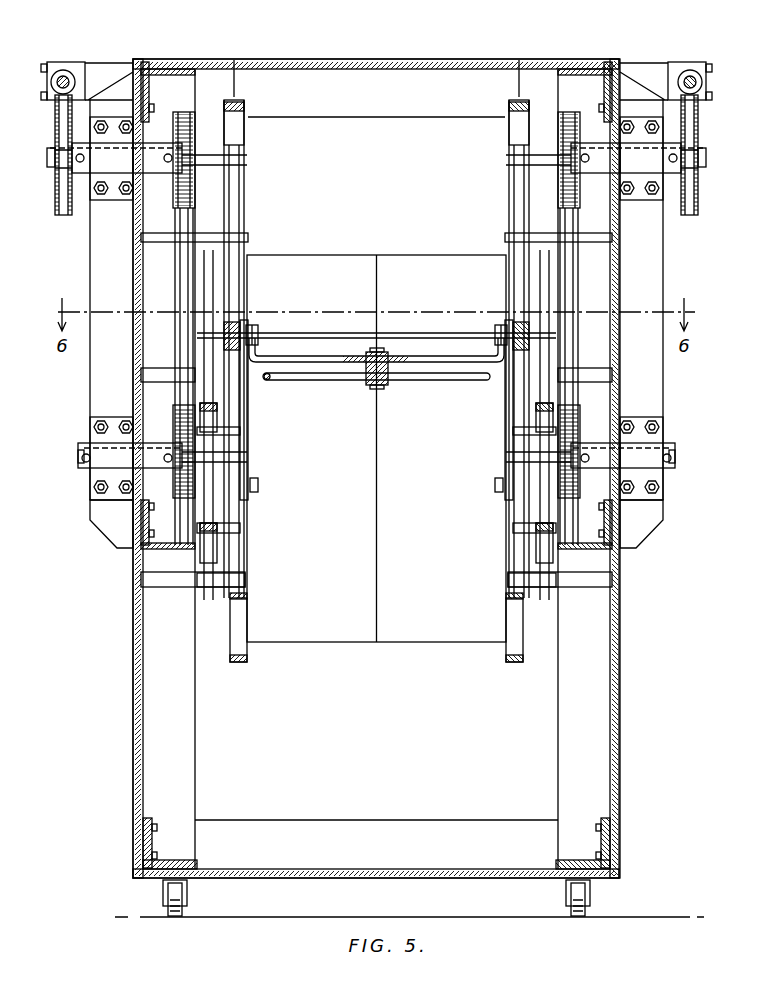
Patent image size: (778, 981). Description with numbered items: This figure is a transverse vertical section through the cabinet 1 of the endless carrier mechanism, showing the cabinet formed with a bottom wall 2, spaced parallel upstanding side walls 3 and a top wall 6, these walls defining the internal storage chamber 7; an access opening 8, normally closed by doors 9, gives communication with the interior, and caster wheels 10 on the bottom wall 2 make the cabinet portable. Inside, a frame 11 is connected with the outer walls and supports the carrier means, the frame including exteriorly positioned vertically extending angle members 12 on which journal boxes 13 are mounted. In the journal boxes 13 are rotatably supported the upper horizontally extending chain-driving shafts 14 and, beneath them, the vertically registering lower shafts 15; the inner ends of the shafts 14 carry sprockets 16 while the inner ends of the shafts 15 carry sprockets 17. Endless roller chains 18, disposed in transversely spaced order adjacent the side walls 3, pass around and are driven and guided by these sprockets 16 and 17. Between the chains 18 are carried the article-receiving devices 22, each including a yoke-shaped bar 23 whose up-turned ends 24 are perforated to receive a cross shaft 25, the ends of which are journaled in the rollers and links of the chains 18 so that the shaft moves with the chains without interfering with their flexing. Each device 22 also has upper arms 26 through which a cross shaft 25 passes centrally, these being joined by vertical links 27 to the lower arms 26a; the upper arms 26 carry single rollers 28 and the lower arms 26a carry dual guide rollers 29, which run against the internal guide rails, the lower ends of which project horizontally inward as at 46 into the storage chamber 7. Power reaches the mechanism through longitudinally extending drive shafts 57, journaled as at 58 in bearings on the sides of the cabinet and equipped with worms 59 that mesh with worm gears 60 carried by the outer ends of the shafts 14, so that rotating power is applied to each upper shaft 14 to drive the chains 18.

The cabinet 1 is at (660, 665).
The bottom wall 2 is at (445, 880).
The side walls 3 is at (135, 645).
The top wall 6 is at (366, 62).
The storage chamber 7 is at (480, 741).
The access opening 8 is at (316, 643).
The doors 9 is at (412, 643).
The caster wheels 10 is at (178, 897).
The frame 11 is at (312, 830).
The angle members 12 is at (100, 258).
The journal boxes 13 is at (100, 195).
The chain-driving shafts 14 is at (48, 158).
The lower shafts 15 is at (78, 456).
The sprockets 16 is at (187, 172).
The sprockets 17 is at (186, 465).
The endless roller chains 18 is at (183, 115).
The article-receiving devices 22 is at (324, 324).
The yoke-shaped bar 23 is at (335, 358).
The up-turned ends 24 is at (258, 330).
The cross shaft 25 is at (417, 336).
The upper arms 26 is at (250, 322).
The lower arms 26a is at (258, 480).
The vertical links 27 is at (250, 418).
The single rollers 28 is at (230, 330).
The dual guide rollers 29 is at (235, 505).
The inwardly projecting rail portions 46 is at (240, 664).
The drive shafts 57 is at (64, 70).
The journals 58 is at (670, 62).
The worms 59 is at (78, 78).
The worm gears 60 is at (56, 120).